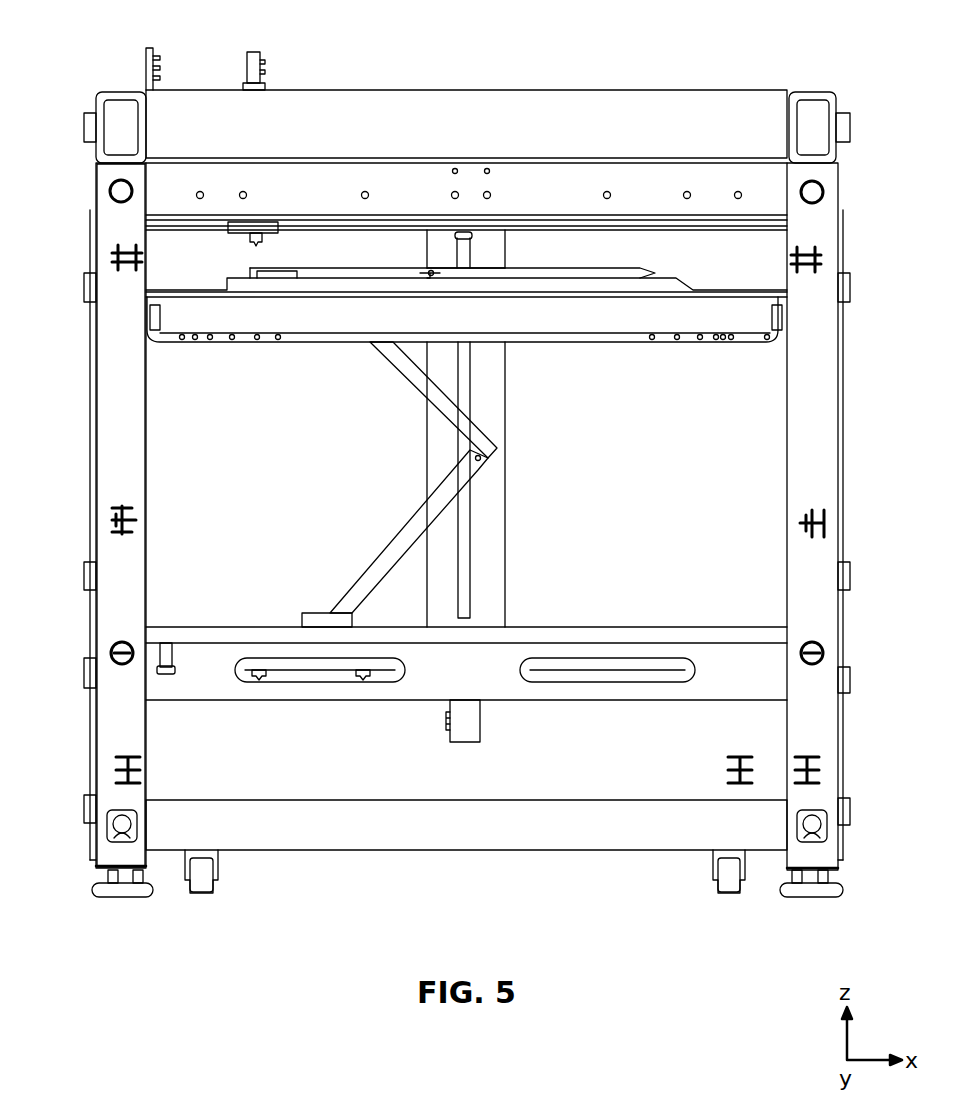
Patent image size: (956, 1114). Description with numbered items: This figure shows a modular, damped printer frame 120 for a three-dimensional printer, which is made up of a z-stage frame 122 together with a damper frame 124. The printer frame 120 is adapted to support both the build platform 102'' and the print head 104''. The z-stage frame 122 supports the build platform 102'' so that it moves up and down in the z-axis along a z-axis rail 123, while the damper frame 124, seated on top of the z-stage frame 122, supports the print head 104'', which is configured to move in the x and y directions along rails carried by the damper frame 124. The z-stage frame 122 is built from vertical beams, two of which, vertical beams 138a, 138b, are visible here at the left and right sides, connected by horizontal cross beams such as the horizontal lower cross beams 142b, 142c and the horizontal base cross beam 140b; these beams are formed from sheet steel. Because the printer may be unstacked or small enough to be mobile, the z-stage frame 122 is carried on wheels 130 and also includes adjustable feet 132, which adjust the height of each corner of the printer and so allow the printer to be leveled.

The printer frame 120 is at (112, 44).
The damper frame 124 is at (88, 128).
The z-stage frame 122 is at (95, 342).
The vertical beam 138a is at (110, 430).
The vertical beam 138b is at (822, 435).
The print head 104'' is at (228, 251).
The build platform 102'' is at (466, 334).
The z-axis rail 123 is at (490, 517).
The horizontal lower cross beam 142b is at (612, 633).
The horizontal lower cross beam 142c is at (665, 690).
The horizontal base cross beam 140b is at (440, 832).
The wheels 130 is at (716, 898).
The adjustable feet 132 is at (805, 900).